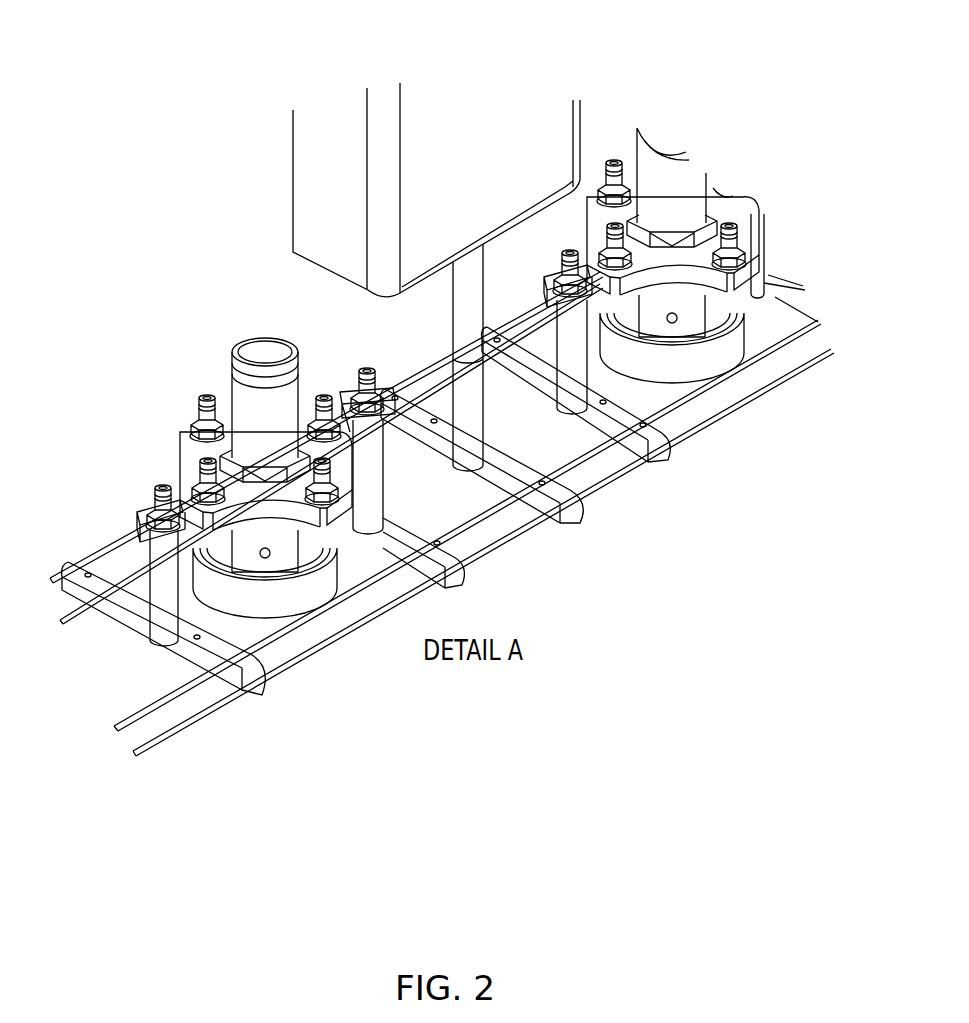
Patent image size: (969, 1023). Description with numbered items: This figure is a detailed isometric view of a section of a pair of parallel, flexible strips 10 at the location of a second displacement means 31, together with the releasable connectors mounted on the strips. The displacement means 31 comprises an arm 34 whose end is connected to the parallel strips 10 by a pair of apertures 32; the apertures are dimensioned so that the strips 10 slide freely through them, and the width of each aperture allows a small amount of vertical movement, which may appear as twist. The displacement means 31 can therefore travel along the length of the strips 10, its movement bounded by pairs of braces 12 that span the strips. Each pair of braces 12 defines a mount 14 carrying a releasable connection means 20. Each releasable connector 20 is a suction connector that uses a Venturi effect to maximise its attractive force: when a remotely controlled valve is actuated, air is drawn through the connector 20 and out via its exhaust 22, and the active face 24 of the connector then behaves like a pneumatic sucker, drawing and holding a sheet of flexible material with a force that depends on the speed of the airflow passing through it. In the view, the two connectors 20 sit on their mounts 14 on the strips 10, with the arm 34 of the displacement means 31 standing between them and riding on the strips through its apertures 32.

The parallel flexible strips 10 is at (442, 514).
The braces 12 is at (666, 410).
The mount 14 is at (187, 428).
The releasable connector 20 is at (693, 318).
The exhaust 22 is at (265, 358).
The active face 24 is at (272, 620).
The displacement means 31 is at (380, 244).
The apertures 32 is at (403, 400).
The arm 34 is at (507, 130).